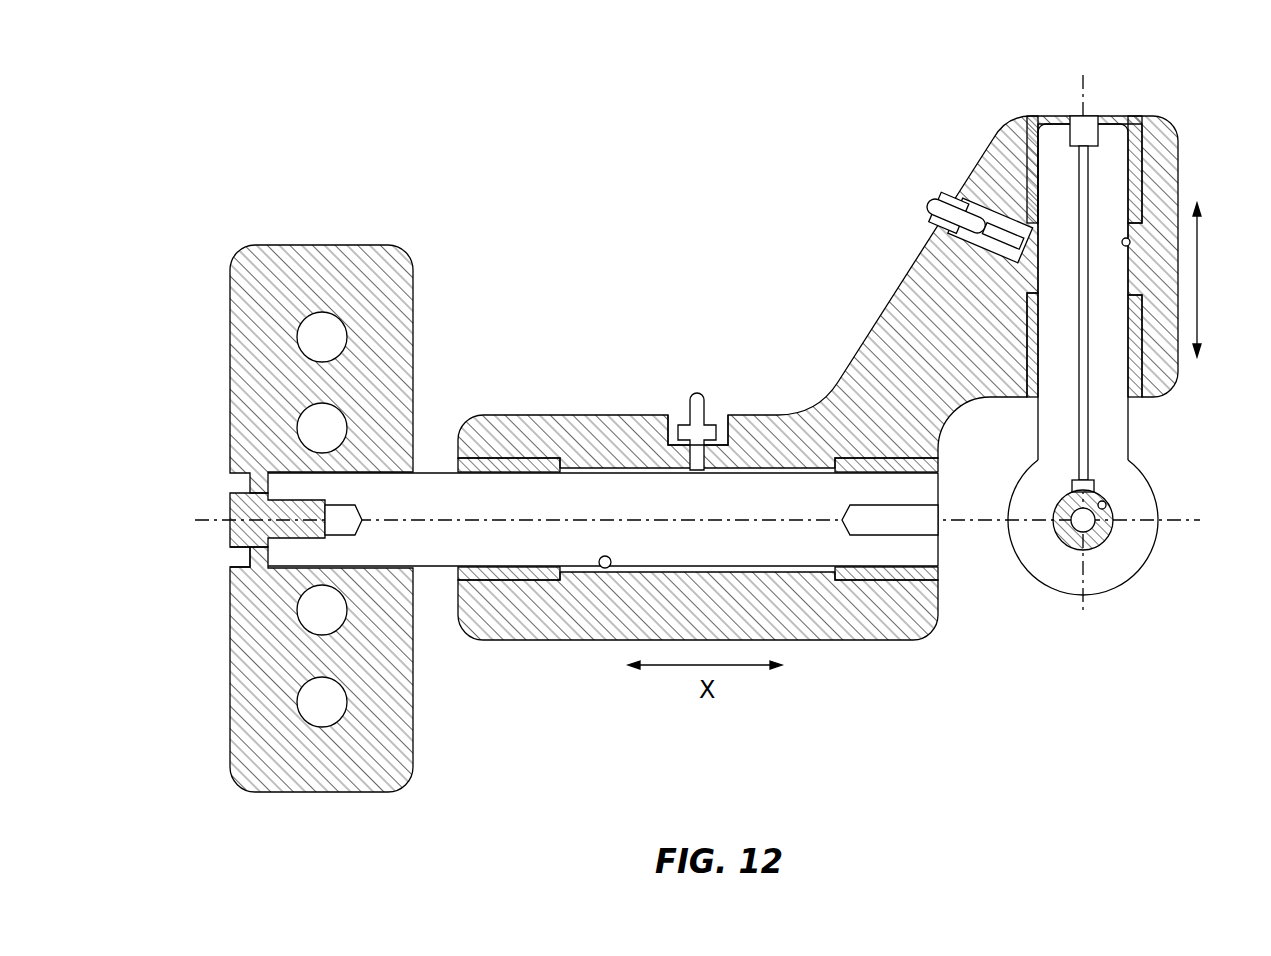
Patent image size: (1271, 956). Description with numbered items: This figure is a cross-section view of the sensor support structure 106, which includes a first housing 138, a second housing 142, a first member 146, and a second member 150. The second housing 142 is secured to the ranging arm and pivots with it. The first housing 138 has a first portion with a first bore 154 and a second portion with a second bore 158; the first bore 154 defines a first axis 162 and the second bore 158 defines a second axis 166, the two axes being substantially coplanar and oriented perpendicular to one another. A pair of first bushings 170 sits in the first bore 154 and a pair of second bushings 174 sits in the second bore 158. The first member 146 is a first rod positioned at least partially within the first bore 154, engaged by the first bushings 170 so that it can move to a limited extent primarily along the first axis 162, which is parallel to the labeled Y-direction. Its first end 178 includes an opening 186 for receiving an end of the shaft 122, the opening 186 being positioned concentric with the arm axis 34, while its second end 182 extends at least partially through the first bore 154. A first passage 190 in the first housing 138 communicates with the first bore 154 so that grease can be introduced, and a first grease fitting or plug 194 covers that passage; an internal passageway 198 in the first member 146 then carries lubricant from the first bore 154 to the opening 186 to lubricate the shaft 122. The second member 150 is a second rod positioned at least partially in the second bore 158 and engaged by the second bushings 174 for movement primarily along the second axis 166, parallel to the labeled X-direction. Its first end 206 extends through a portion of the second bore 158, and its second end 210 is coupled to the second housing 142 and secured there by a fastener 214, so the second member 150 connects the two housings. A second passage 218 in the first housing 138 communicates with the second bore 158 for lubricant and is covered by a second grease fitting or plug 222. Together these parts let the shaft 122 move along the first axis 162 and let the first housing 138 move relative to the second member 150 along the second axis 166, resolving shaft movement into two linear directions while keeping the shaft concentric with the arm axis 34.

The arm axis 34 is at (1100, 530).
The support structure 106 is at (455, 208).
The shaft 122 is at (1058, 508).
The first housing 138 is at (820, 655).
The second housing 142 is at (210, 243).
The first member 146 is at (1089, 652).
The second member 150 is at (436, 447).
The first bore 154 is at (1131, 240).
The second bore 158 is at (604, 570).
The first axis 162 is at (1080, 598).
The second axis 166 is at (232, 528).
The first bushings 170 is at (1140, 350).
The second bushings 174 is at (525, 584).
The first end 178 is at (1102, 592).
The second end 182 is at (1078, 128).
The opening 186 is at (1104, 508).
The first passage 190 is at (1010, 250).
The first grease fitting or plug 194 is at (950, 205).
The internal passageway 198 is at (1090, 398).
The first end 206 is at (930, 548).
The second end 210 is at (262, 490).
The fastener 214 is at (232, 556).
The second passage 218 is at (720, 440).
The second grease fitting or plug 222 is at (697, 420).